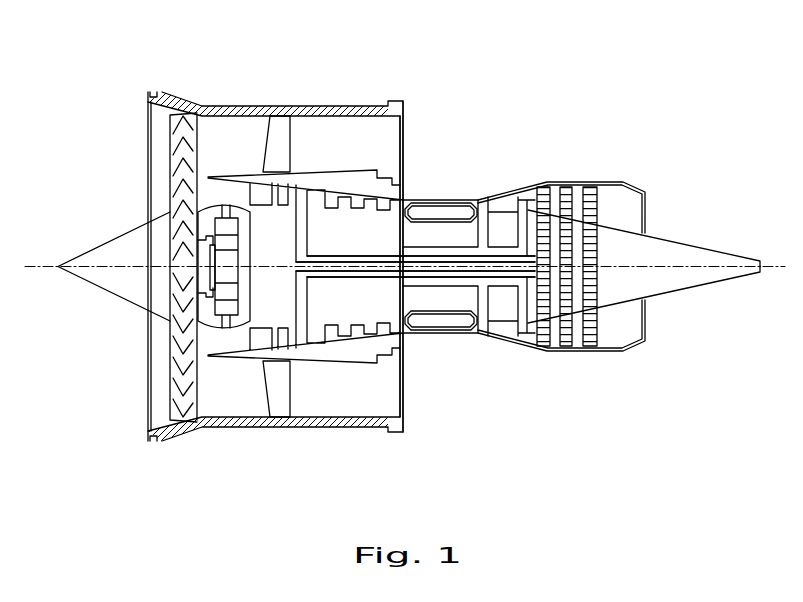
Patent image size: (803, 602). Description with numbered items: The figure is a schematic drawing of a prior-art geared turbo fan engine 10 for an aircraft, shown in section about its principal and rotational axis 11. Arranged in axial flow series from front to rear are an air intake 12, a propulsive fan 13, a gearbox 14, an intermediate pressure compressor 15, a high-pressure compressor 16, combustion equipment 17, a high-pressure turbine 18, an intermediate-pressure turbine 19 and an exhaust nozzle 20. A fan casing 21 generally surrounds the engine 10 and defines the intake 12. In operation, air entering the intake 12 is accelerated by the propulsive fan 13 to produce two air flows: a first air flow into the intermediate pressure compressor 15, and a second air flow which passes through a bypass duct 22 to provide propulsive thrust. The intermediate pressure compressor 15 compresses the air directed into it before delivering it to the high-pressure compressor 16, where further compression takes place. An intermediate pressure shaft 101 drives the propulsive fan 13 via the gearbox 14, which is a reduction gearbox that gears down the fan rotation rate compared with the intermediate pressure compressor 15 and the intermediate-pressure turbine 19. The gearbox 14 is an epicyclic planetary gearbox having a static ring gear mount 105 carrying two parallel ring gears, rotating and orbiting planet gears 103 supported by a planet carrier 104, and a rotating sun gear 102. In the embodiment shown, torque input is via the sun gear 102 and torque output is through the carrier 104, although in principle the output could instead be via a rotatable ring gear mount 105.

The geared turbo fan engine 10 is at (645, 117).
The principal and rotational axis 11 is at (45, 262).
The air intake 12 is at (126, 131).
The propulsive fan 13 is at (176, 350).
The gearbox 14 is at (238, 318).
The intermediate pressure compressor 15 is at (286, 200).
The high-pressure compressor 16 is at (409, 214).
The combustion equipment 17 is at (442, 322).
The high-pressure turbine 18 is at (531, 186).
The intermediate-pressure turbine 19 is at (569, 186).
The exhaust nozzle 20 is at (641, 213).
The fan casing 21 is at (347, 106).
The bypass duct 22 is at (394, 133).
The intermediate pressure shaft 101 is at (345, 268).
The sun gear 102 is at (200, 296).
The planet gears 103 is at (212, 252).
The planet carrier 104 is at (196, 246).
The static ring gear mount 105 is at (224, 216).